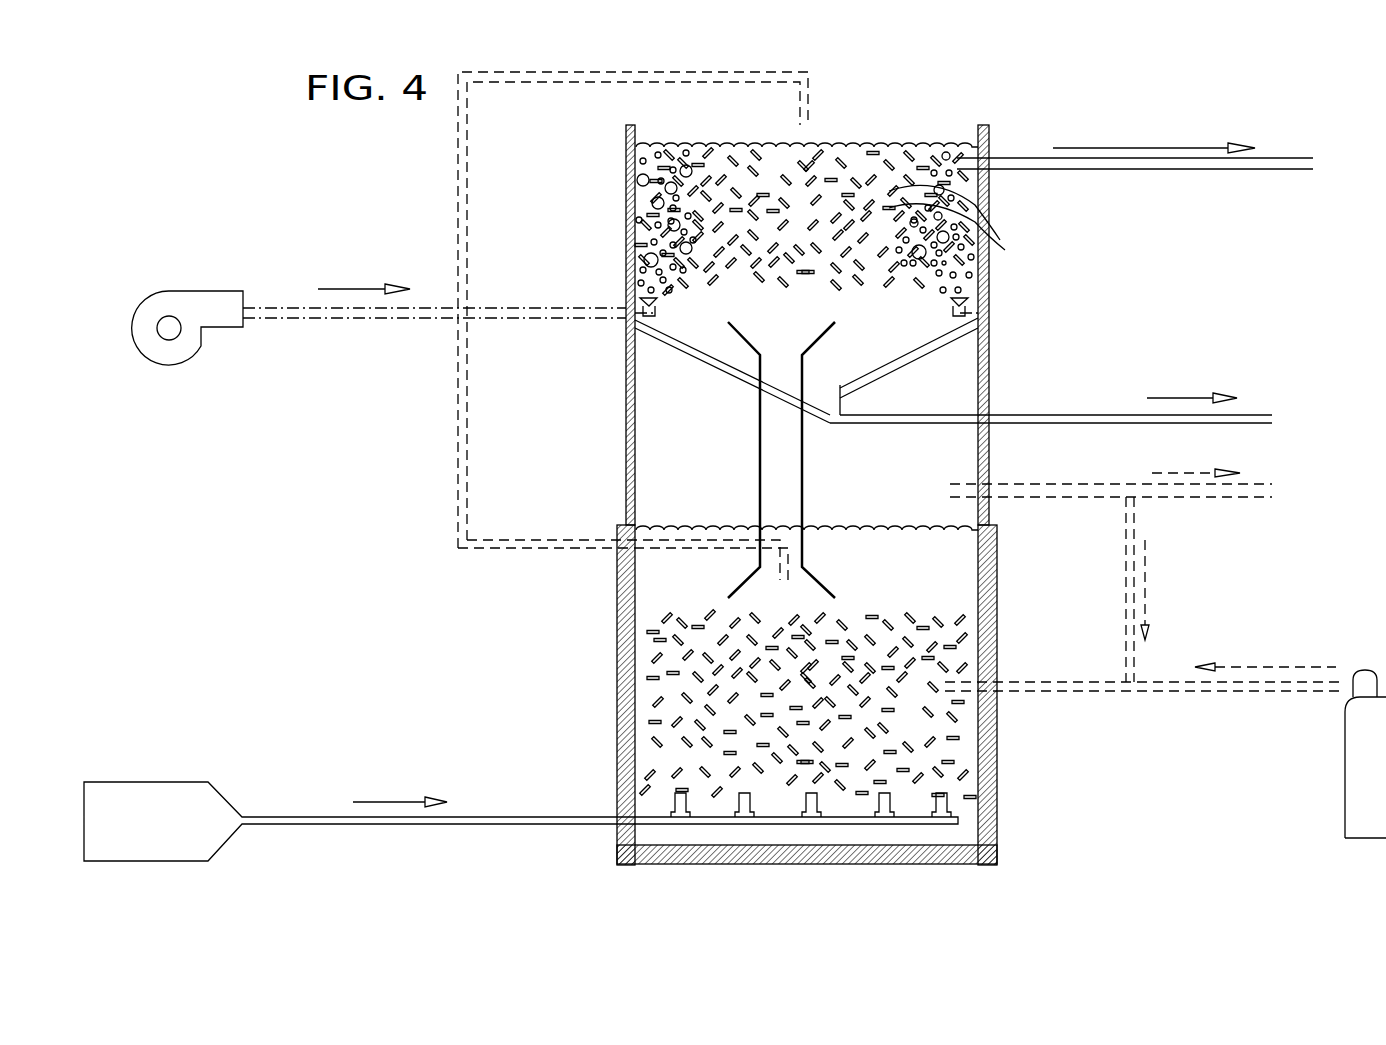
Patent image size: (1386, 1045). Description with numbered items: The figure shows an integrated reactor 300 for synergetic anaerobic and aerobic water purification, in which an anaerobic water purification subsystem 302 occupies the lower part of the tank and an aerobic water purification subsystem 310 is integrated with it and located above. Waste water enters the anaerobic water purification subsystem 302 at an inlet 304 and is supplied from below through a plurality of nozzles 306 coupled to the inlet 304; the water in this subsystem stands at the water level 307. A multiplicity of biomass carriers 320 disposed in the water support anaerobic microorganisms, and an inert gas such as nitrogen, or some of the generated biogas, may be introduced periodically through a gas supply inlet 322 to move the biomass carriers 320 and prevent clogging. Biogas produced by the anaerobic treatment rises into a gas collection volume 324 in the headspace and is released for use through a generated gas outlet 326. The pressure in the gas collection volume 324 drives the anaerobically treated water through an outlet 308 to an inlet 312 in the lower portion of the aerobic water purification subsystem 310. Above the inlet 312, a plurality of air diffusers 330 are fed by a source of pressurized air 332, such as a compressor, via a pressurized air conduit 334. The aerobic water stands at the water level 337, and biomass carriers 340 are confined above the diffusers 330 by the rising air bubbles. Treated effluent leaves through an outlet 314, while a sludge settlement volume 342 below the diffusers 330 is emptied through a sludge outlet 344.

The integrated reactor 300 is at (998, 344).
The anaerobic water purification subsystem 302 is at (990, 658).
The inlet 304 is at (122, 781).
The nozzles 306 is at (738, 812).
The water level 307 is at (741, 528).
The outlet 308 is at (520, 549).
The aerobic water purification subsystem 310 is at (626, 238).
The inlet 312 is at (810, 110).
The outlet 314 is at (1015, 155).
The biomass carriers 320 is at (896, 678).
The gas supply inlet 322 is at (1190, 693).
The gas collection volume 324 is at (695, 442).
The generated gas outlet 326 is at (1060, 499).
The air diffusers 330 is at (657, 313).
The source of pressurized air 332 is at (198, 345).
The pressurized air conduit 334 is at (330, 320).
The water level 337 is at (743, 145).
The biomass carriers 340 is at (1000, 242).
The sludge settlement volume 342 is at (745, 357).
The sludge outlet 344 is at (1030, 415).